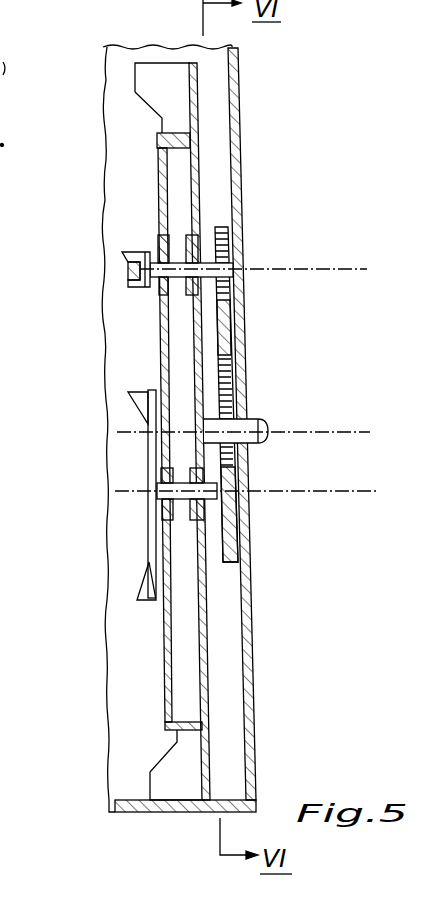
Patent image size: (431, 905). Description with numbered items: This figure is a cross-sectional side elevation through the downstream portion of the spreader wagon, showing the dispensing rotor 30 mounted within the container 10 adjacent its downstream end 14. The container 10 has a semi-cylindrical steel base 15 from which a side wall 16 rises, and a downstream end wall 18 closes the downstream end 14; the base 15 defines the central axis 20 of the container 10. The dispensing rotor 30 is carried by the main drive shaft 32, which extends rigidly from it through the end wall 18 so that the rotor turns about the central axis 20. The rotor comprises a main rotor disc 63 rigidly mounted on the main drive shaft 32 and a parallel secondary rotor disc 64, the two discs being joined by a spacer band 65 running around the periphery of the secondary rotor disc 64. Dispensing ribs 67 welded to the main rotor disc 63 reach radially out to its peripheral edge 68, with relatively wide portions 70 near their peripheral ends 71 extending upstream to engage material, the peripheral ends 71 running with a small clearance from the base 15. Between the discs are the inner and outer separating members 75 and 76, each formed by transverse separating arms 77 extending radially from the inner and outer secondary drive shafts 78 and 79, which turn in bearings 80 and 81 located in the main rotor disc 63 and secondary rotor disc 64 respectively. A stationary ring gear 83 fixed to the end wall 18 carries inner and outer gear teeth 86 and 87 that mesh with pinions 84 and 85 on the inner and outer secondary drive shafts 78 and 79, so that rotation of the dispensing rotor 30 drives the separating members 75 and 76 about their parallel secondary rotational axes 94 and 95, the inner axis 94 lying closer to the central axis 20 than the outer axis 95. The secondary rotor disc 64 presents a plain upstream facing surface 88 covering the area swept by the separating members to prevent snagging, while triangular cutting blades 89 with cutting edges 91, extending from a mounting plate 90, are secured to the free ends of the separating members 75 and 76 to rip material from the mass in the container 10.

The container 10 is at (198, 437).
The downstream end 14 is at (216, 142).
The base 15 is at (120, 804).
The side wall 16 is at (118, 66).
The downstream end wall 18 is at (255, 165).
The central axis 20 is at (339, 431).
The dispensing rotor 30 is at (263, 431).
The main drive shaft 32 is at (251, 427).
The main rotor disc 63 is at (198, 90).
The secondary rotor disc 64 is at (160, 176).
The spacer band 65 is at (178, 133).
The dispensing rib 67 is at (160, 86).
The peripheral edge 68 is at (194, 62).
The wide portion 70 is at (150, 63).
The peripheral end 71 is at (118, 73).
The inner separating member 75 is at (93, 437).
The outer separating member 76 is at (127, 276).
The transverse separating arm 77 is at (148, 447).
The inner secondary drive shaft 78 is at (233, 471).
The outer secondary drive shaft 79 is at (236, 214).
The bearing 80 is at (206, 258).
The bearing 81 is at (179, 338).
The stationary ring gear 83 is at (291, 394).
The pinion 84 is at (233, 508).
The pinion 85 is at (232, 257).
The inner gear teeth 86 is at (232, 387).
The outer gear teeth 87 is at (236, 297).
The upstream facing surface 88 is at (180, 435).
The cutting blade 89 is at (135, 252).
The mounting plate 90 is at (128, 264).
The cutting edge 91 is at (122, 254).
The inner secondary rotational axis 94 is at (349, 489).
The outer secondary rotational axis 95 is at (345, 268).